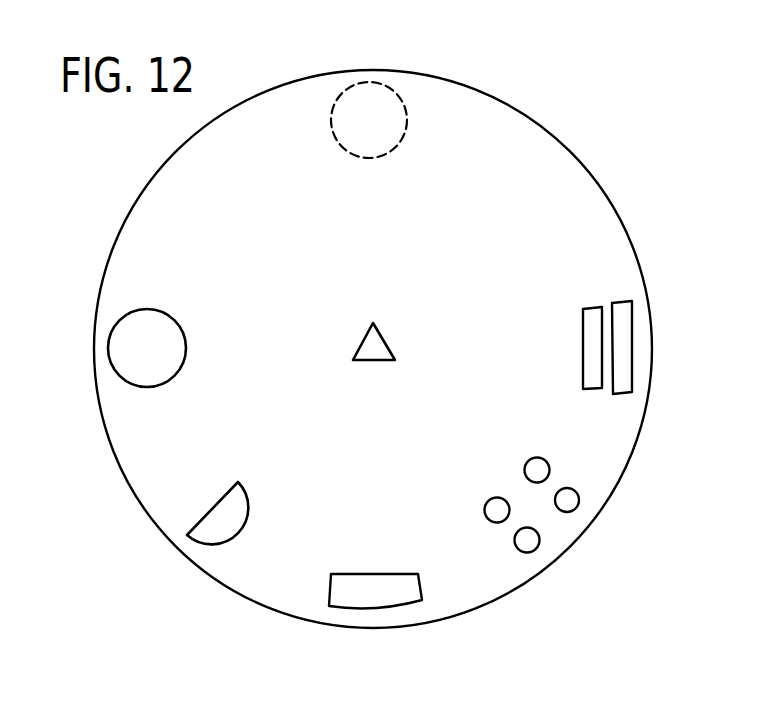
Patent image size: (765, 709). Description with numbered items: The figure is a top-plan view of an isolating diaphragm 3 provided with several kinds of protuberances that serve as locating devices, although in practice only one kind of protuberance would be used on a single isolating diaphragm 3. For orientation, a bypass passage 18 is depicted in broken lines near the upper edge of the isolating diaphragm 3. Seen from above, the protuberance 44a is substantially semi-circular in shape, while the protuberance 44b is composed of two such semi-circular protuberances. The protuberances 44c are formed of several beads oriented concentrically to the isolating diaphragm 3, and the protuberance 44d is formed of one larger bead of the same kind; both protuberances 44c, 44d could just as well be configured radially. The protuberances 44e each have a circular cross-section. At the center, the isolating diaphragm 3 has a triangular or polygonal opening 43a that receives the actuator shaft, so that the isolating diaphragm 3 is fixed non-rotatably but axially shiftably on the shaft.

The isolating diaphragm 3 is at (552, 163).
The bypass passage 18 is at (355, 101).
The triangular or polygonal opening 43a is at (380, 340).
The protuberance 44a is at (202, 532).
The protuberance 44b is at (127, 347).
The protuberances 44c is at (594, 320).
The protuberance 44d is at (407, 595).
The protuberances 44e is at (565, 502).